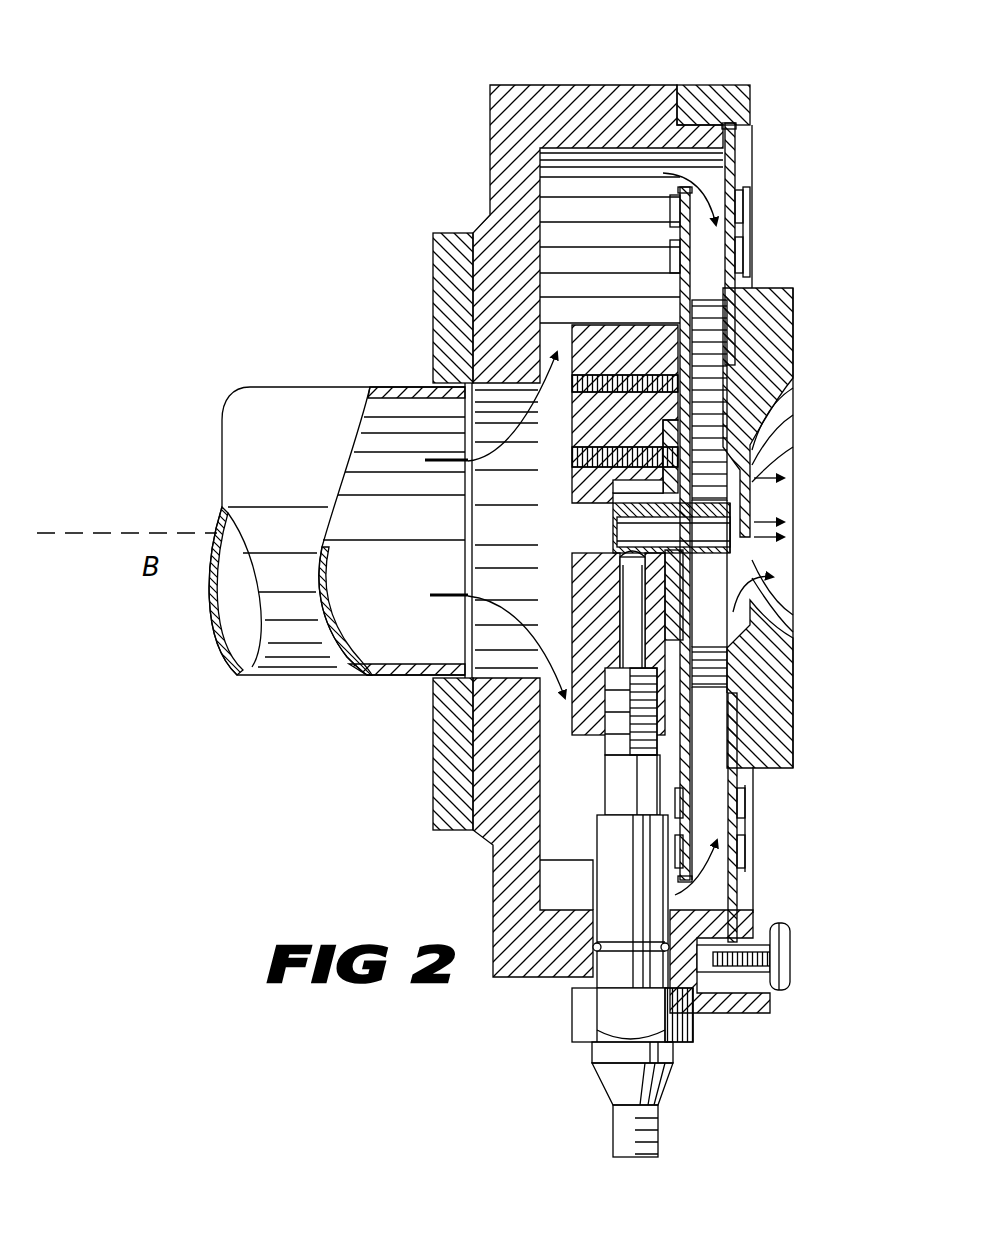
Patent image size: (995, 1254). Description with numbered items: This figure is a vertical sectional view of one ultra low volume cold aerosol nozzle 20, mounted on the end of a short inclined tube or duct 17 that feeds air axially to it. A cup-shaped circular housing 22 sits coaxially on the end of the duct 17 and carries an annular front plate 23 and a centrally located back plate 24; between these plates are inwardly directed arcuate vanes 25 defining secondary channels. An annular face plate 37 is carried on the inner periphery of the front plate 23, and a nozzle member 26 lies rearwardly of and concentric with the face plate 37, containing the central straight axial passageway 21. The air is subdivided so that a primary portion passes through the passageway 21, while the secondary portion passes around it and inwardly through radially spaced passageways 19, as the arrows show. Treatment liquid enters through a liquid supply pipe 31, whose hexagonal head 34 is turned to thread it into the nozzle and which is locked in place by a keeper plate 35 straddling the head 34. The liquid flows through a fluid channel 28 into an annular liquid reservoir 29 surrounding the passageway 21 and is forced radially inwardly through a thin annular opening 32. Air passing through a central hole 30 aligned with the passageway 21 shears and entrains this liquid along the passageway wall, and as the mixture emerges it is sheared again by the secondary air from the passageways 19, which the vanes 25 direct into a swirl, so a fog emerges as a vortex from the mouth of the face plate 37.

The inclined tube or duct 17 is at (302, 398).
The radially spaced passageways 19 is at (753, 288).
The nozzle 20 is at (486, 155).
The central cylindrical passageway 21 is at (792, 580).
The housing 22 is at (589, 88).
The front plate 23 is at (752, 184).
The back plate 24 is at (680, 298).
The arcuate vanes 25 is at (750, 232).
The nozzle member 26 is at (727, 648).
The fluid channel 28 is at (572, 733).
The annular liquid reservoir 29 is at (612, 528).
The central hole 30 is at (600, 553).
The liquid supply pipe 31 is at (620, 775).
The thin annular opening 32 is at (577, 567).
The hexagonal head 34 is at (585, 1012).
The keeper plate 35 is at (775, 1013).
The annular face plate 37 is at (790, 723).